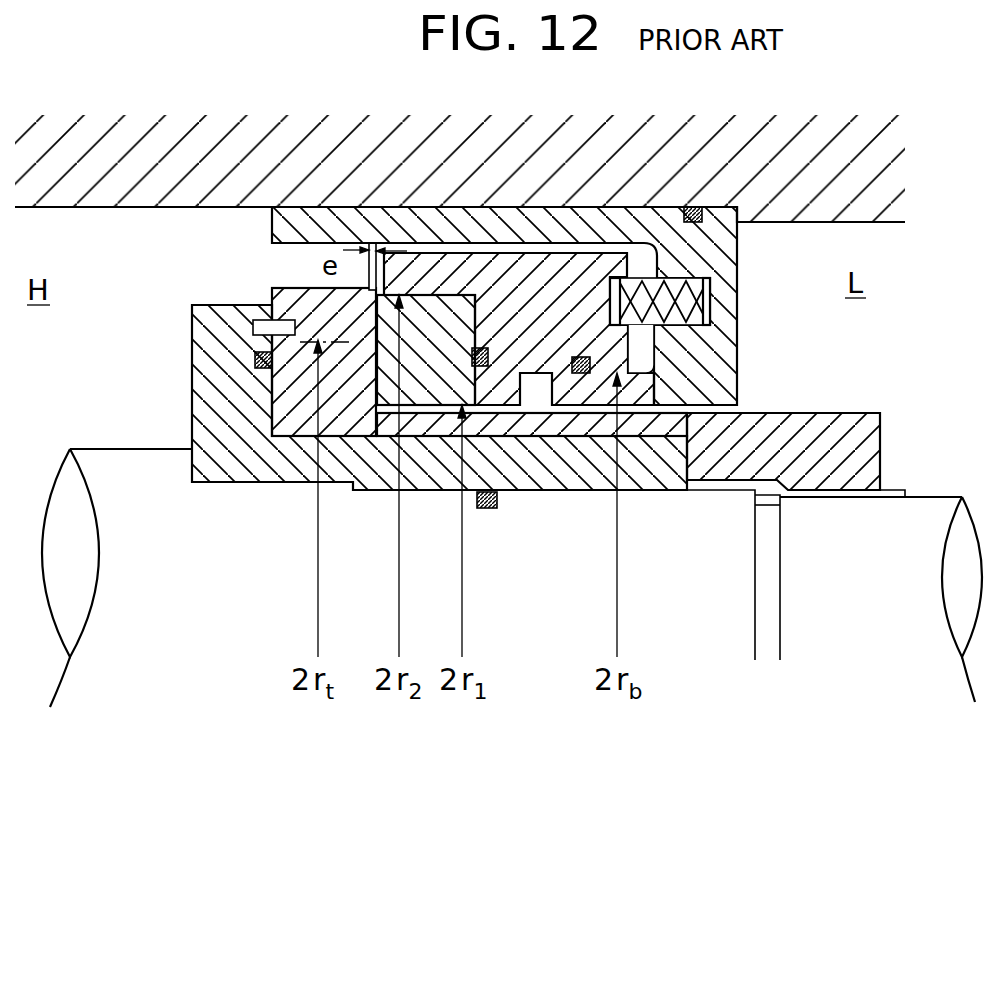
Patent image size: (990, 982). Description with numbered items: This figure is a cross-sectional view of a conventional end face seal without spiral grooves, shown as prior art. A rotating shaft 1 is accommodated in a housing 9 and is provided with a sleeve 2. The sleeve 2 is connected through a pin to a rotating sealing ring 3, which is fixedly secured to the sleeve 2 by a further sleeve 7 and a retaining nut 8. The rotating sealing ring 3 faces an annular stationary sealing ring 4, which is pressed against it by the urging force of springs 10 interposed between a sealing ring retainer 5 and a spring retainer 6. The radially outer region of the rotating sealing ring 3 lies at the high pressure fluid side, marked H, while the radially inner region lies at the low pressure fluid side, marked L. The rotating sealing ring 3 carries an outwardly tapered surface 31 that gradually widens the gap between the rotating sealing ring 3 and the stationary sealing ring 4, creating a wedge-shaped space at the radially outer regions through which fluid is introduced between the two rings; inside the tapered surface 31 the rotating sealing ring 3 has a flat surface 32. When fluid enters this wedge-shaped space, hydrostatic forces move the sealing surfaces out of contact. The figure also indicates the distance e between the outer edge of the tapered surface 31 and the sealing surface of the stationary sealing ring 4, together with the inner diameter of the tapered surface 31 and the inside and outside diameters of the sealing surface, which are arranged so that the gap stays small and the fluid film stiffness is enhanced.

The rotating shaft 1 is at (202, 600).
The sleeve 2 is at (203, 383).
The rotating sealing ring 3 is at (297, 293).
The stationary sealing ring 4 is at (420, 393).
The sealing ring retainer 5 is at (558, 355).
The spring retainer 6 is at (725, 327).
The sleeve 7 is at (670, 427).
The retaining nut 8 is at (862, 448).
The housing 9 is at (580, 95).
The springs 10 is at (705, 300).
The tapered surface 31 is at (386, 292).
The flat surface 32 is at (380, 357).